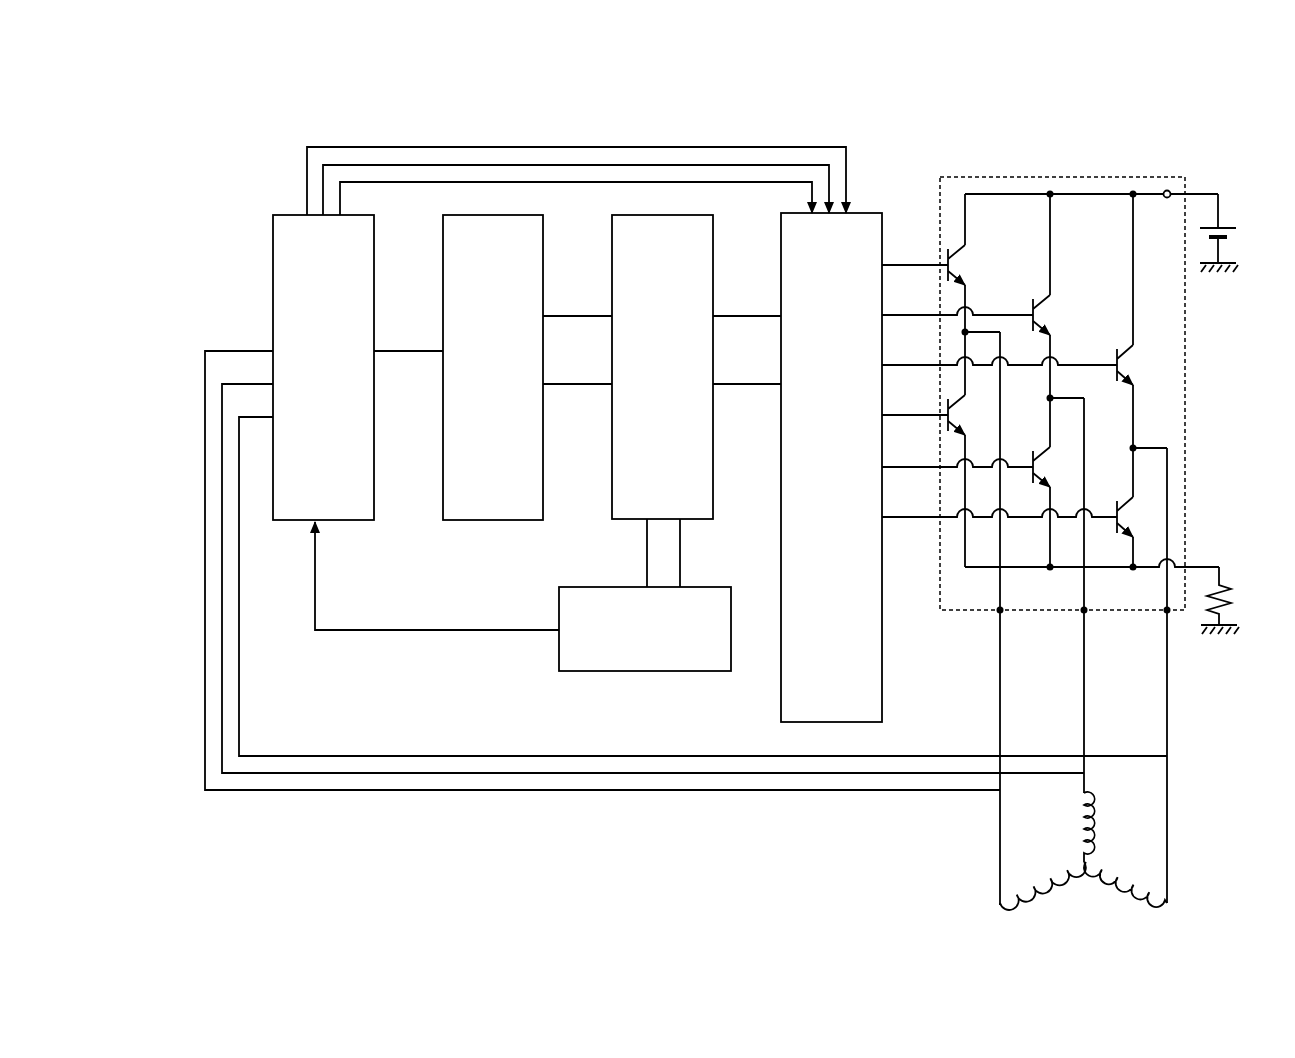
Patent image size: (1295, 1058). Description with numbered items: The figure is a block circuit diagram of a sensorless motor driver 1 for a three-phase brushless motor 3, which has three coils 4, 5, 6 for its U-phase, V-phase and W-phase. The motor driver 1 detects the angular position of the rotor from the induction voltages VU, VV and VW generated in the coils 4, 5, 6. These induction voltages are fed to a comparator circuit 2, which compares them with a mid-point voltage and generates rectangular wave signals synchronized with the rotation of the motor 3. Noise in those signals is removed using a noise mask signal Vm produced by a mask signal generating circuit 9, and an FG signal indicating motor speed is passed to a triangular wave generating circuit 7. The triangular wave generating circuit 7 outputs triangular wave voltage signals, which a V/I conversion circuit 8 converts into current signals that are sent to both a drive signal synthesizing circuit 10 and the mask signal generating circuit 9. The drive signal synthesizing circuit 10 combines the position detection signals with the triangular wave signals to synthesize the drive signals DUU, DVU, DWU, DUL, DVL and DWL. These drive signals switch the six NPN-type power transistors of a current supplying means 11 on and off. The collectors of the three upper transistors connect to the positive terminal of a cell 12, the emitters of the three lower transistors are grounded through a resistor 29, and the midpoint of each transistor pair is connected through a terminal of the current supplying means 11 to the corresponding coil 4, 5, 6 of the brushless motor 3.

The sensorless motor driver 1 is at (1158, 154).
The comparator circuit 2 is at (298, 232).
The brushless motor 3 is at (1083, 865).
The coil 4 is at (1042, 875).
The coil 5 is at (1095, 815).
The coil 6 is at (1138, 871).
The triangular wave generating circuit 7 is at (493, 232).
The V/I conversion circuit 8 is at (681, 226).
The mask signal generating circuit 9 is at (647, 656).
The drive signal synthesizing circuit 10 is at (863, 232).
The current supplying means 11 is at (1068, 178).
The cell 12 is at (1218, 228).
The resistor 29 is at (1226, 590).